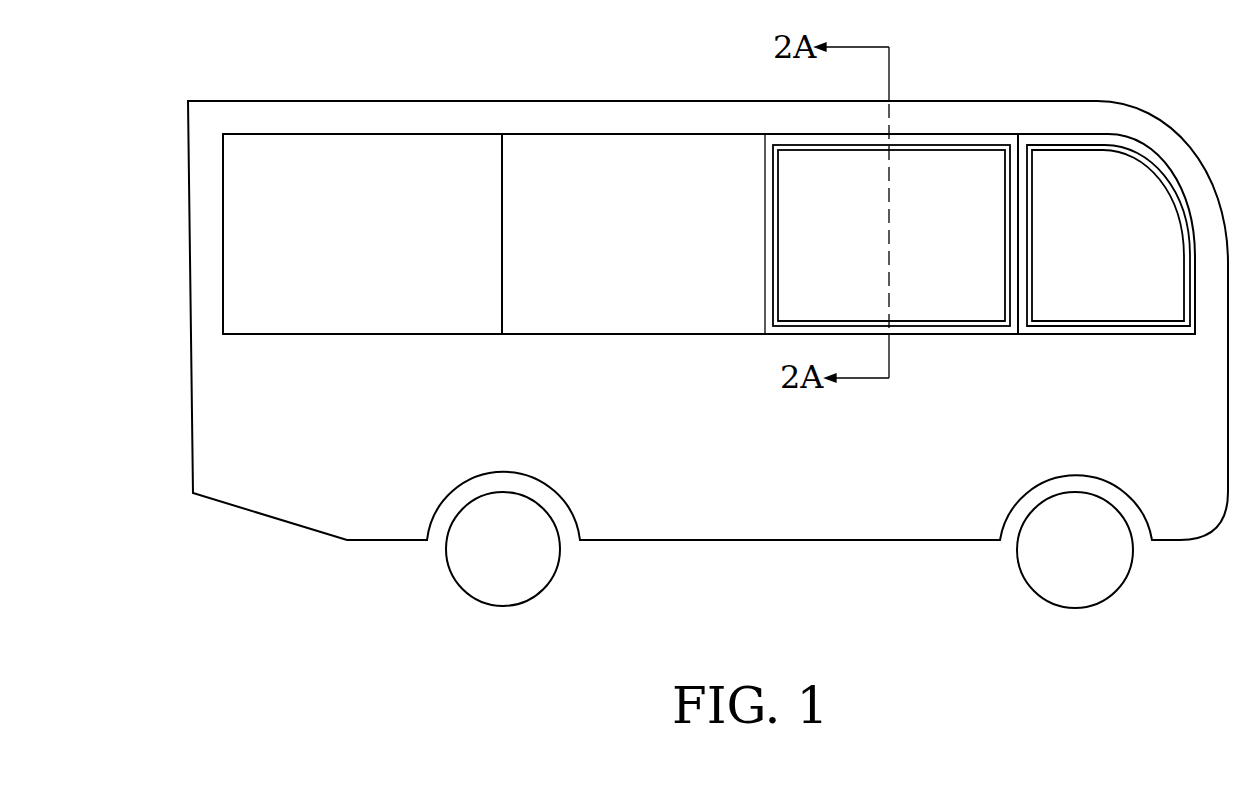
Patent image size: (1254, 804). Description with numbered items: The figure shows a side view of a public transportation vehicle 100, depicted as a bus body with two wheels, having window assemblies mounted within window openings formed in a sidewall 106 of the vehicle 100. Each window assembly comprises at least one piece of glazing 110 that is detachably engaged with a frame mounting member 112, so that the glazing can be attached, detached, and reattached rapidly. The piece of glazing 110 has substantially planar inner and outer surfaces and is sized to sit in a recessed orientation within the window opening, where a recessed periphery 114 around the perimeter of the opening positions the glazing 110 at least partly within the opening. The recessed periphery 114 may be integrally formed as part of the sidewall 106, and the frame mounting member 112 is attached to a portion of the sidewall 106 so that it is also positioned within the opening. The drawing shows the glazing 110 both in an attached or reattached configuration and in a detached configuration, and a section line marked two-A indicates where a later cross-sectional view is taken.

The public transportation vehicle 100 is at (258, 101).
The sidewall 106 is at (713, 520).
The piece of glazing 110 is at (528, 233).
The frame mounting member 112 is at (849, 320).
The recessed periphery 114 is at (977, 333).